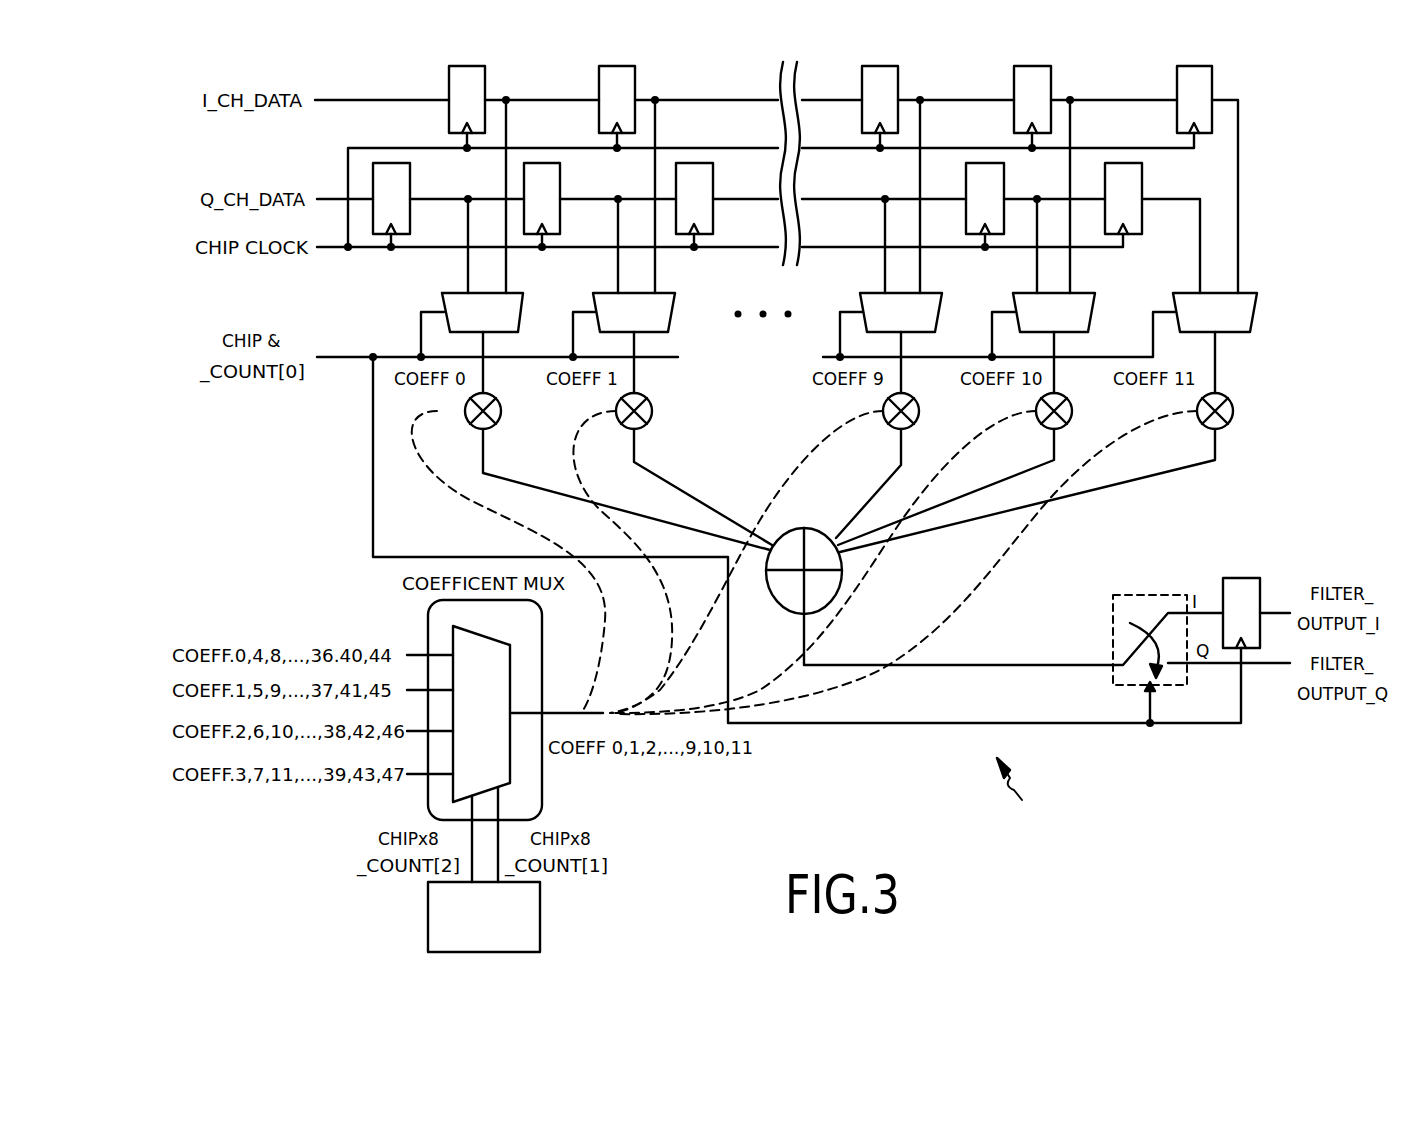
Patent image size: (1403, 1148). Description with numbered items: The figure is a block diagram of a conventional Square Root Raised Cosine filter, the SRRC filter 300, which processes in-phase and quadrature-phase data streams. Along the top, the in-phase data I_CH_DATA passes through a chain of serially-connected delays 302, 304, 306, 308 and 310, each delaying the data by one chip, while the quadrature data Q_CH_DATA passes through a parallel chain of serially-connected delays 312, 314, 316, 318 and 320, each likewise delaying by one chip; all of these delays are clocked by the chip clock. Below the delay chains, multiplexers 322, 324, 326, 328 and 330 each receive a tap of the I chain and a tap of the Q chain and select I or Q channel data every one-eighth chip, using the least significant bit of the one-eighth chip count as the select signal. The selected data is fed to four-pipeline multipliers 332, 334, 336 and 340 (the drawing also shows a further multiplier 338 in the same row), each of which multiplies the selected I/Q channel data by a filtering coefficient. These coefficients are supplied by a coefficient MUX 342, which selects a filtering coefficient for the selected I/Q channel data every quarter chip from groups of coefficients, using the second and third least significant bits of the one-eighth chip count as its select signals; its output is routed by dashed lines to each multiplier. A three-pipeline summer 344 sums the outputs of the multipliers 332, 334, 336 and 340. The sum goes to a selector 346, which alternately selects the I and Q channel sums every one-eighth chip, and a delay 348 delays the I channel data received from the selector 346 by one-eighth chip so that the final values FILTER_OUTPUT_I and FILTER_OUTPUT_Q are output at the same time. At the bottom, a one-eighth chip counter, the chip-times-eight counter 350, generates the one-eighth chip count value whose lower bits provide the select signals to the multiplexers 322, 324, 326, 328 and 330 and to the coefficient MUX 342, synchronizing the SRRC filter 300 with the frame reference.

The SRRC filter 300 is at (1031, 786).
The delay 302 is at (485, 70).
The delay 304 is at (635, 70).
The delay 306 is at (898, 70).
The delay 308 is at (1051, 70).
The delay 310 is at (1212, 70).
The delay 312 is at (410, 167).
The delay 314 is at (560, 167).
The delay 316 is at (713, 167).
The delay 318 is at (1004, 167).
The delay 320 is at (1142, 167).
The multiplexer 322 is at (519, 296).
The multiplexer 324 is at (671, 296).
The multiplexer 326 is at (938, 296).
The multiplexer 328 is at (1091, 296).
The multiplexer 330 is at (1253, 296).
The 4-pipeline multiplier 332 is at (501, 411).
The 4-pipeline multiplier 334 is at (652, 411).
The 4-pipeline multiplier 336 is at (919, 411).
The multiplier 338 is at (1072, 411).
The 4-pipeline multiplier 340 is at (1233, 411).
The coefficient MUX 342 is at (542, 790).
The 3-pipeline summer 344 is at (804, 528).
The selector 346 is at (1148, 595).
The delay 348 is at (1241, 578).
The CHIP×8 counter 350 is at (540, 918).